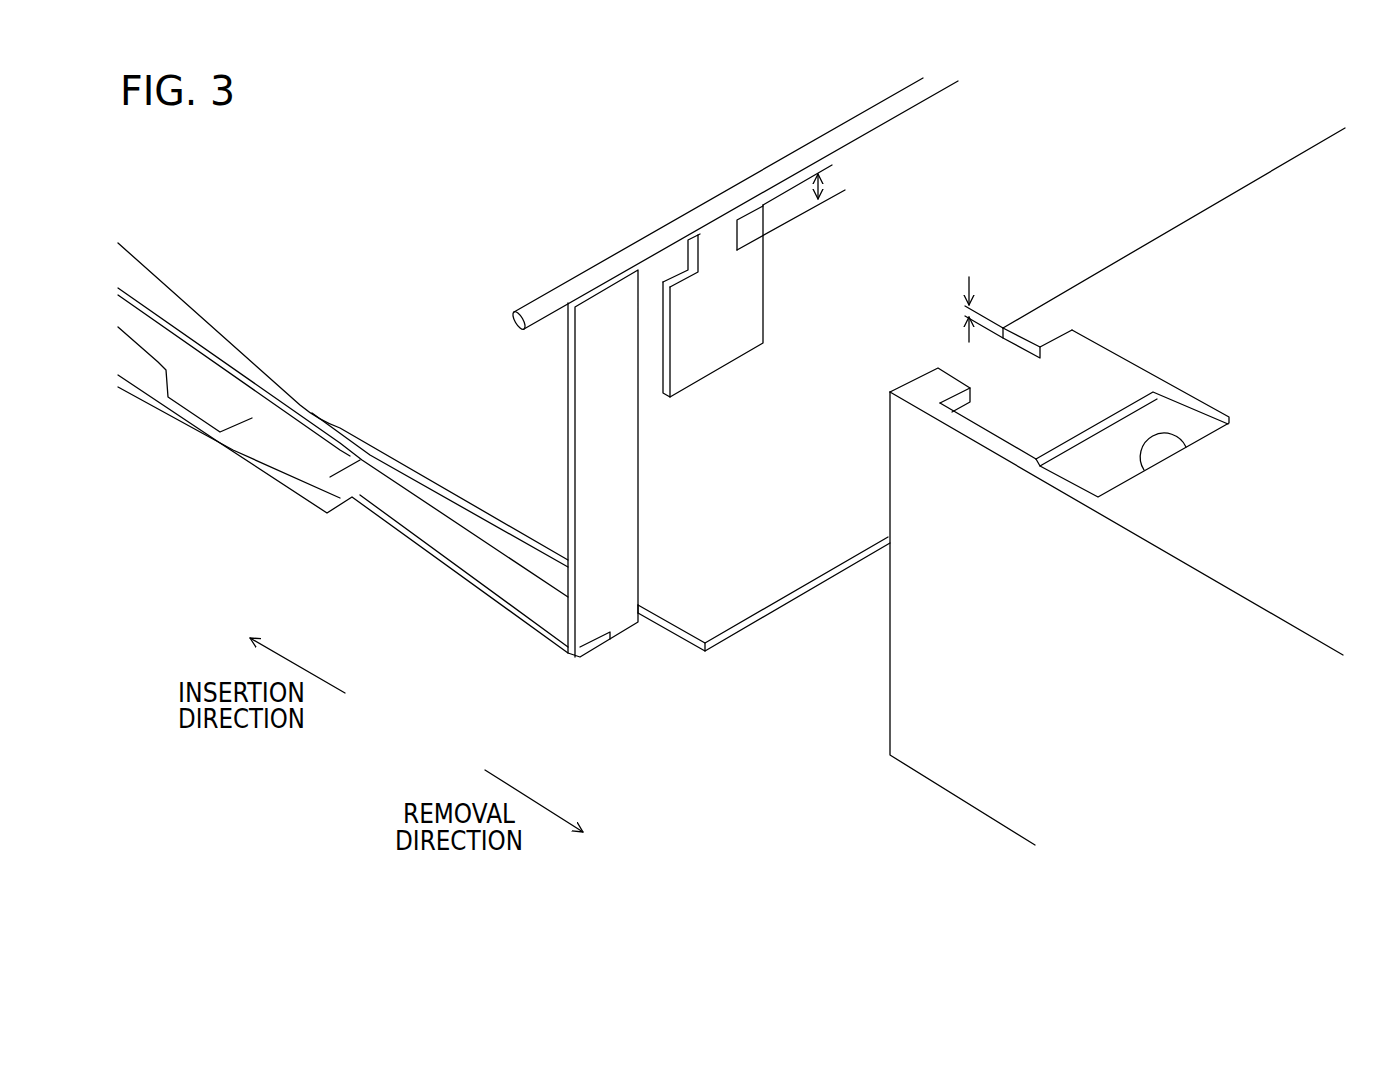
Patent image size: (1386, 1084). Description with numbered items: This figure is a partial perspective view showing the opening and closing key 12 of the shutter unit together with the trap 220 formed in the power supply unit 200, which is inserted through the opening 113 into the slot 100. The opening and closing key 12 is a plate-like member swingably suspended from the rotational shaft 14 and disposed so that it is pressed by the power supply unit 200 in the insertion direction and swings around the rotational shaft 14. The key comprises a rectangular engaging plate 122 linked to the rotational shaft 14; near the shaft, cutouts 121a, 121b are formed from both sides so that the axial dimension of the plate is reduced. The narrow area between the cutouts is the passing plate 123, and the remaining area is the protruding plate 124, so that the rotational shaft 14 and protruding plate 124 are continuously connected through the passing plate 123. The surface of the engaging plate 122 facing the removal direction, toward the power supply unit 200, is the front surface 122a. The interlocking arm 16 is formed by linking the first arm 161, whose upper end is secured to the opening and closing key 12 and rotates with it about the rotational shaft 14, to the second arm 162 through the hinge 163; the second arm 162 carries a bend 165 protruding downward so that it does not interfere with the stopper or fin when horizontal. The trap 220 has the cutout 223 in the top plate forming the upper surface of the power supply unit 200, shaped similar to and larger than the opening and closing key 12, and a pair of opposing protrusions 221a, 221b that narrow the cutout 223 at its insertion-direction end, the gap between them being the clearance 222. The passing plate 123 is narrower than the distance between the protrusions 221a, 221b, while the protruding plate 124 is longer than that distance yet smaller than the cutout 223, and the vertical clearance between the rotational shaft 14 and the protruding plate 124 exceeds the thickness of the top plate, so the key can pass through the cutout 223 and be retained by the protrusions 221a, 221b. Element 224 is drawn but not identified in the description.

The slot 100 is at (223, 575).
The opening and closing key 12 is at (813, 260).
The rotational shaft 14 is at (540, 303).
The interlocking arm 16 is at (468, 613).
The opening 113 is at (747, 547).
The cutout 121a is at (683, 263).
The cutout 121b is at (750, 228).
The engaging plate 122 is at (773, 317).
The front surface 122a is at (688, 363).
The passing plate 123 is at (713, 247).
The protruding plate 124 is at (737, 337).
The first arm 161 is at (613, 615).
The second arm 162 is at (437, 533).
The hinge 163 is at (568, 660).
The bend 165 is at (303, 478).
The power supply unit 200 is at (875, 793).
The trap 220 is at (1190, 347).
The protrusion 221a is at (935, 380).
The protrusion 221b is at (1038, 322).
The clearance 222 is at (952, 348).
The cutout 223 is at (1092, 380).
The semicircular cutout 224 is at (1167, 433).